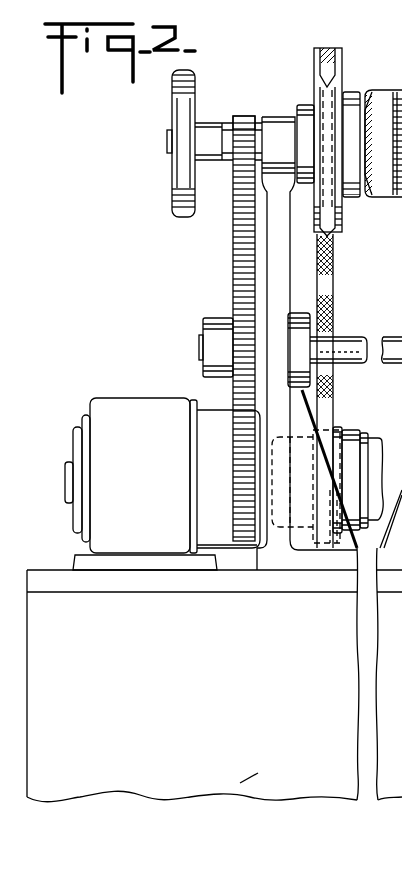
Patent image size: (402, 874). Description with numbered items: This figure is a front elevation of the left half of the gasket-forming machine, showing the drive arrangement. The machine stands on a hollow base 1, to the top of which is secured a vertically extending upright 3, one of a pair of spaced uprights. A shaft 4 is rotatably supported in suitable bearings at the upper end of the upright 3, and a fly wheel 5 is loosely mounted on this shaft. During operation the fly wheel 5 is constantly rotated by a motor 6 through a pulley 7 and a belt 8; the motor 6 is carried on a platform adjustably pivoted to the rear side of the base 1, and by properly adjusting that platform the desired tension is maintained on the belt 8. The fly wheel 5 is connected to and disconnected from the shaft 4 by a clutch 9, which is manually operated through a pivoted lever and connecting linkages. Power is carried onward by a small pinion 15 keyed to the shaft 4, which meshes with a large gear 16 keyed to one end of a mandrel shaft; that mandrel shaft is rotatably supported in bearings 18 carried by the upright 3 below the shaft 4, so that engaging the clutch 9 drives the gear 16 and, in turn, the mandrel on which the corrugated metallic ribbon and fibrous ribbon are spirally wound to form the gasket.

The hollow base 1 is at (195, 779).
The upright 3 is at (273, 244).
The shaft 4 is at (170, 143).
The fly wheel 5 is at (345, 68).
The motor 6 is at (143, 405).
The pulley 7 is at (338, 424).
The belt 8 is at (328, 302).
The clutch 9 is at (372, 100).
The pinion 15 is at (240, 116).
The gear 16 is at (232, 289).
The bearings 18 is at (303, 318).